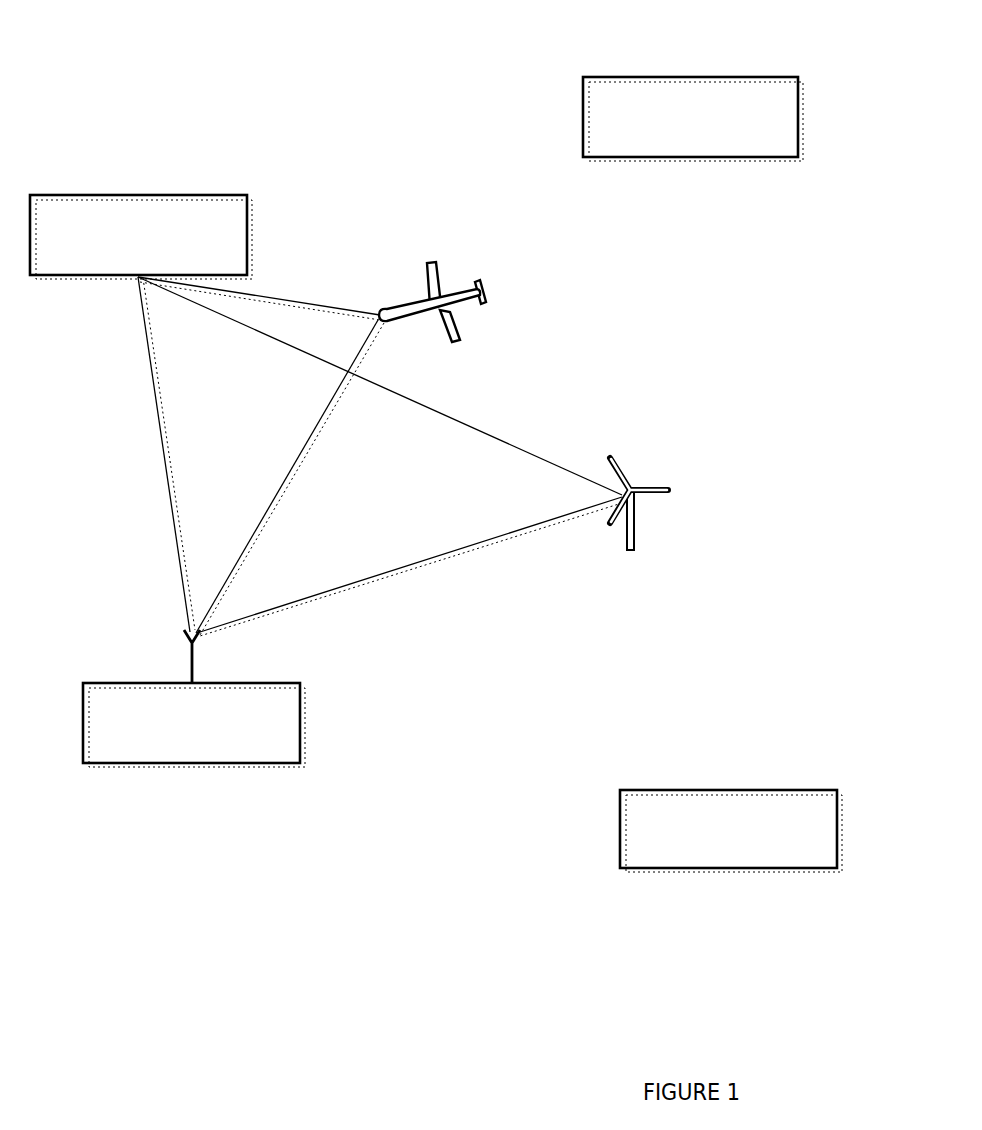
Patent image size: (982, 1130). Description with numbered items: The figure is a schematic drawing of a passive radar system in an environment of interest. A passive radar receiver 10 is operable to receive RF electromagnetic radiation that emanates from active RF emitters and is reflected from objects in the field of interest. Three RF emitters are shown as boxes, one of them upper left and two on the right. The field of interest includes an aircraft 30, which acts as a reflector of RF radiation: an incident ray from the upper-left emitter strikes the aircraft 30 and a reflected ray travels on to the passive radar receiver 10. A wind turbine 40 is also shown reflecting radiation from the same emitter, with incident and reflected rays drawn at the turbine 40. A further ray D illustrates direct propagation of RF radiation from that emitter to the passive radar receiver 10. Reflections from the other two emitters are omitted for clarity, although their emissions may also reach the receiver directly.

The passive radar receiver 10 is at (192, 764).
The aircraft 30 is at (457, 289).
The wind turbine 40 is at (635, 486).
The direct ray D is at (170, 482).